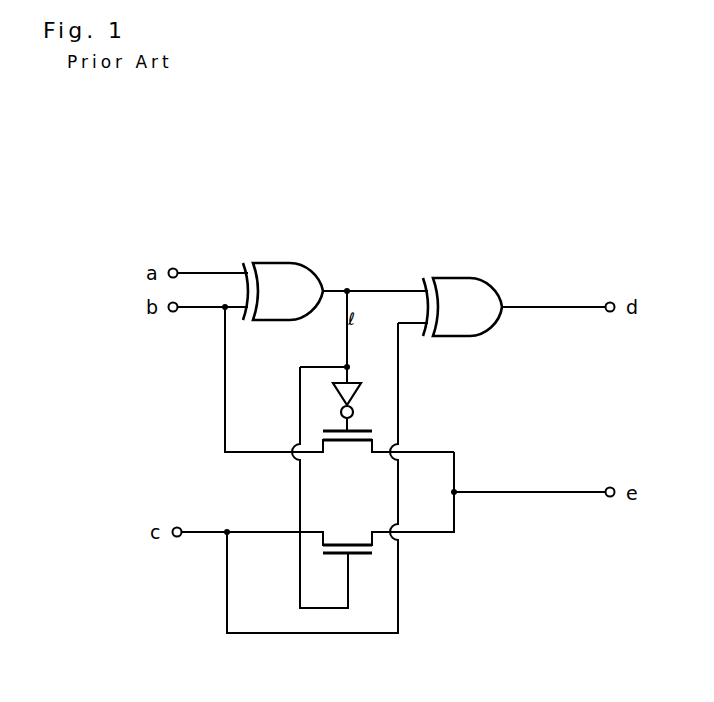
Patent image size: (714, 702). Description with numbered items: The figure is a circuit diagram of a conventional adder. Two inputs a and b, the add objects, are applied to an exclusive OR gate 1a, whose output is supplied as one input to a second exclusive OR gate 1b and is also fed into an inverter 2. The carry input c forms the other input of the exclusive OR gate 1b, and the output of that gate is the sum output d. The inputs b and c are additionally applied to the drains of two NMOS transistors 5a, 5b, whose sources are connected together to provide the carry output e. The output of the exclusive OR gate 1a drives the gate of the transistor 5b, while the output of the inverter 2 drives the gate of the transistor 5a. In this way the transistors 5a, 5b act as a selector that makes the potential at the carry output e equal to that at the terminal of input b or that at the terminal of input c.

The exclusive OR gate 1a is at (284, 263).
The exclusive OR gate 1b is at (468, 278).
The inverter 2 is at (352, 383).
The NMOS transistor 5a is at (357, 446).
The NMOS transistor 5b is at (350, 544).